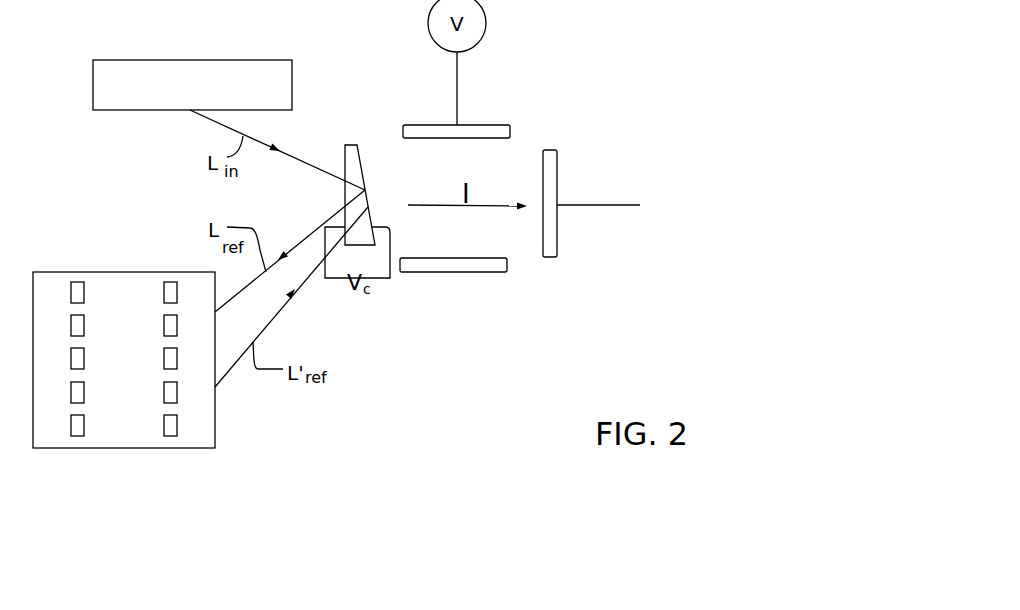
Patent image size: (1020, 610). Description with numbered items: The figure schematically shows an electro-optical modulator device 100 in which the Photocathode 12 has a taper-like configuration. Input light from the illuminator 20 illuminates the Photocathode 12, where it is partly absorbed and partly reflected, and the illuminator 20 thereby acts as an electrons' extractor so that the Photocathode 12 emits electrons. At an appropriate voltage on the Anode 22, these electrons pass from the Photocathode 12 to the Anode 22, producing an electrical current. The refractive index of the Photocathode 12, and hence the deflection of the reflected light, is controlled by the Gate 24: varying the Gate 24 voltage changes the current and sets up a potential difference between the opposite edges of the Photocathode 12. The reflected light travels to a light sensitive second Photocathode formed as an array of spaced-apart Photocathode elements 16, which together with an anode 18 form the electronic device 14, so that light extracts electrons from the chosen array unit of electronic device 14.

The electro-optical modulator device 100 is at (612, 87).
The Photocathode 12 is at (353, 118).
The electronic device 14 is at (112, 448).
The Photocathode elements 16 is at (165, 388).
The anode 18 is at (85, 298).
The illuminator 20 is at (167, 60).
The Anode 22 is at (548, 153).
The Gate 24 is at (502, 125).